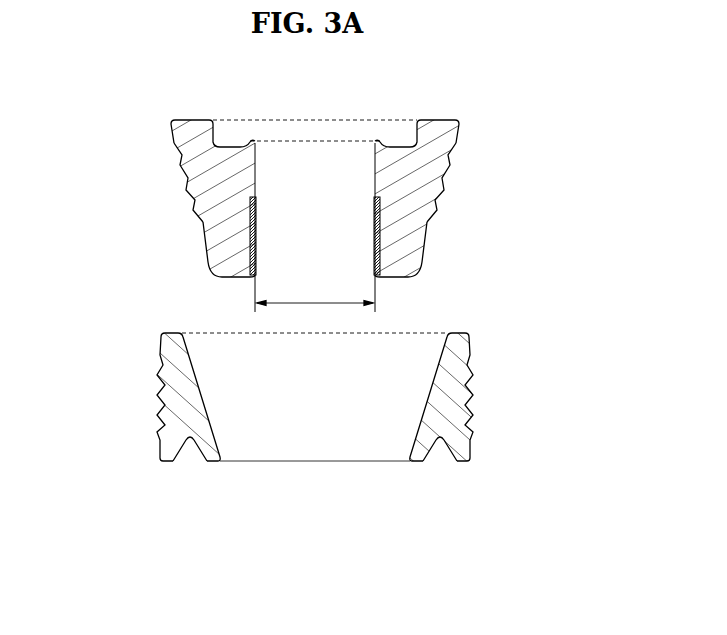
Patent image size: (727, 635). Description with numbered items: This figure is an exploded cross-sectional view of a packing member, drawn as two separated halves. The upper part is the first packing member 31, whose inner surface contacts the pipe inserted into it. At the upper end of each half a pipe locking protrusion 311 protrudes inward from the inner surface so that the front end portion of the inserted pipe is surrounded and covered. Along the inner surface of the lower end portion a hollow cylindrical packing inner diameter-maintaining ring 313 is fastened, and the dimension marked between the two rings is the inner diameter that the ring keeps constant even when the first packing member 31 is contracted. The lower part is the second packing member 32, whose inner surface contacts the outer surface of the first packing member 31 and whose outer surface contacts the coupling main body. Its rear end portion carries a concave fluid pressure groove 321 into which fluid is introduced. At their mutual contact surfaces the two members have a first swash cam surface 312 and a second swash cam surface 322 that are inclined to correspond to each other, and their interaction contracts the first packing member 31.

The first packing member 31 is at (302, 227).
The pipe locking protrusion 311 is at (246, 140).
The first swash cam surface 312 is at (203, 258).
The packing inner diameter-maintaining ring 313 is at (248, 226).
The second packing member 32 is at (310, 321).
The fluid pressure groove 321 is at (190, 440).
The second swash cam surface 322 is at (202, 392).